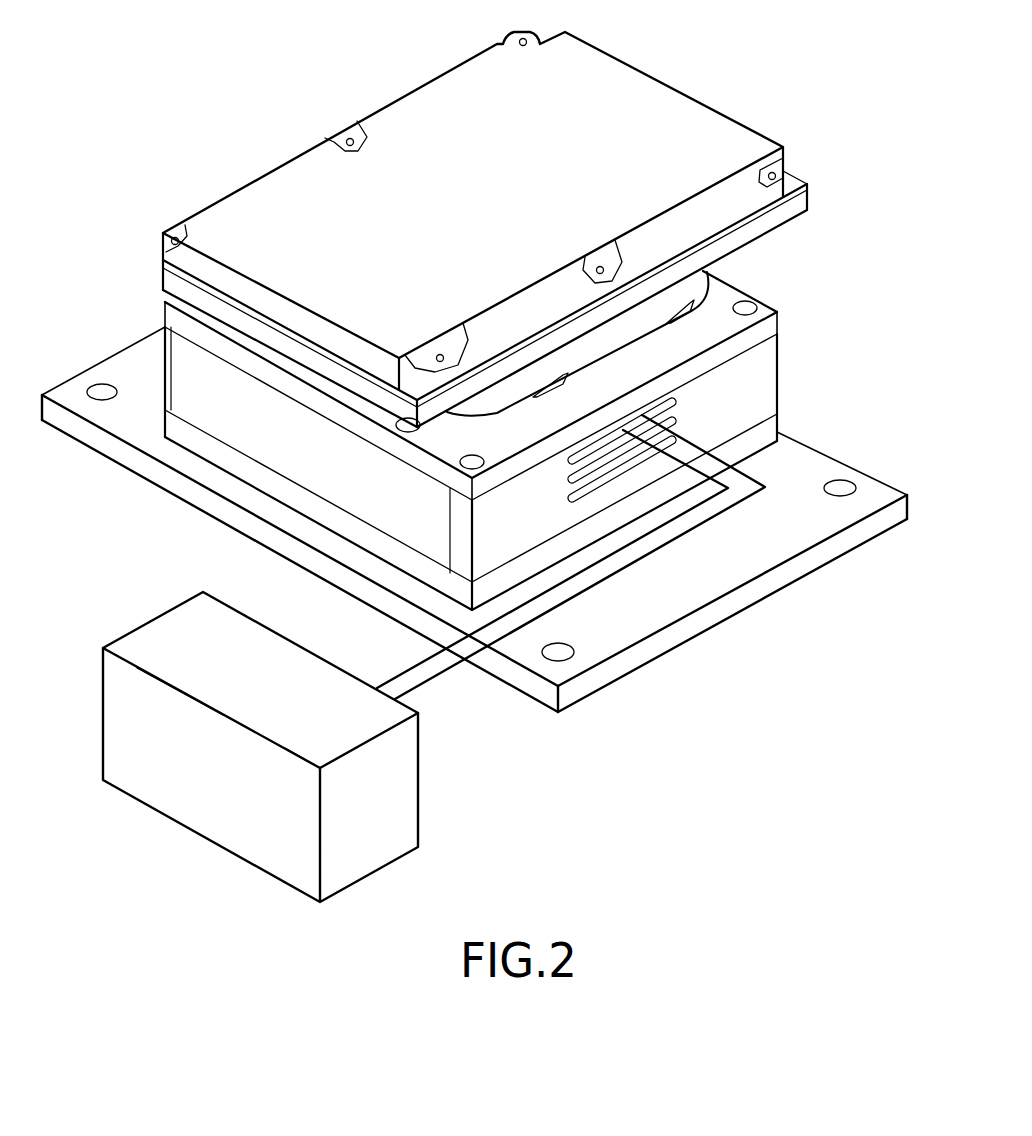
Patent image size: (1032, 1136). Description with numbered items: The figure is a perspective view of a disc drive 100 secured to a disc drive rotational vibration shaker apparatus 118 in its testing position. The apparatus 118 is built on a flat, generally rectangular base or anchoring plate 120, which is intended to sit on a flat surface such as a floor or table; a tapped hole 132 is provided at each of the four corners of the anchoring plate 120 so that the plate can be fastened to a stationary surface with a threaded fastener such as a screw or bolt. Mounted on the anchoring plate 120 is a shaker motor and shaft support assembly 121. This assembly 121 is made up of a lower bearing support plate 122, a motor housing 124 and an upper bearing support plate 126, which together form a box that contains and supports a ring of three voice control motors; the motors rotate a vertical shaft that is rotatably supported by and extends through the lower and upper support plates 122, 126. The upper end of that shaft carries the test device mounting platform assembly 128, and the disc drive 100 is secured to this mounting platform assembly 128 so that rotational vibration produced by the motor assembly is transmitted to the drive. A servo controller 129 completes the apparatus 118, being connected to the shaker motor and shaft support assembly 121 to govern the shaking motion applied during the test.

The disc drive 100 is at (692, 112).
The disc drive rotational vibration shaker apparatus 118 is at (808, 98).
The anchoring plate 120 is at (778, 577).
The shaker motor and shaft support assembly 121 is at (815, 369).
The lower bearing support plate 122 is at (777, 437).
The motor housing 124 is at (777, 403).
The upper bearing support plate 126 is at (767, 327).
The test device mounting platform assembly 128 is at (818, 190).
The servo controller 129 is at (228, 827).
The tapped hole 132 is at (843, 490).